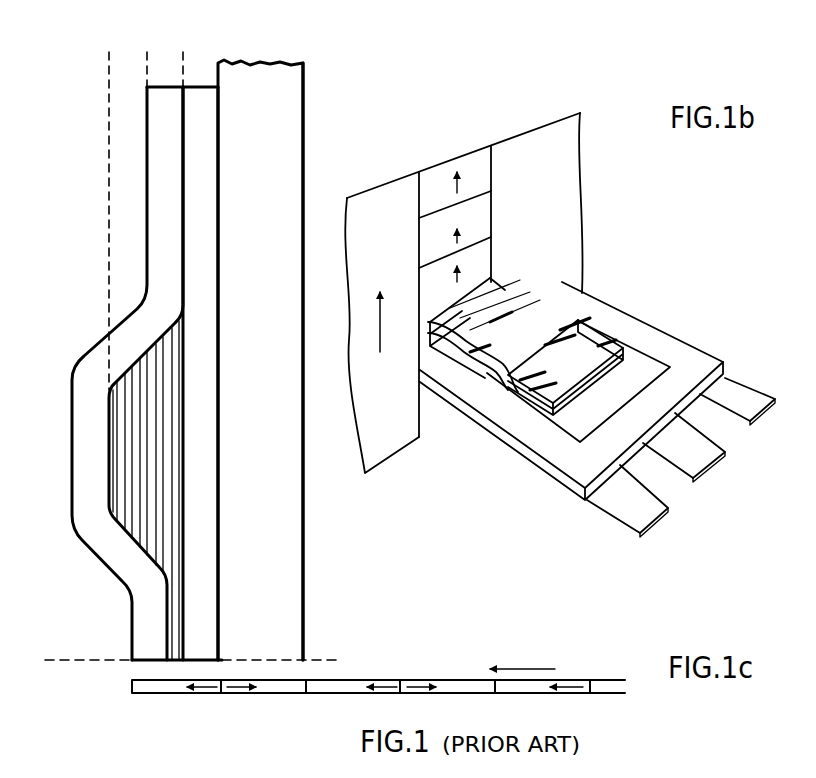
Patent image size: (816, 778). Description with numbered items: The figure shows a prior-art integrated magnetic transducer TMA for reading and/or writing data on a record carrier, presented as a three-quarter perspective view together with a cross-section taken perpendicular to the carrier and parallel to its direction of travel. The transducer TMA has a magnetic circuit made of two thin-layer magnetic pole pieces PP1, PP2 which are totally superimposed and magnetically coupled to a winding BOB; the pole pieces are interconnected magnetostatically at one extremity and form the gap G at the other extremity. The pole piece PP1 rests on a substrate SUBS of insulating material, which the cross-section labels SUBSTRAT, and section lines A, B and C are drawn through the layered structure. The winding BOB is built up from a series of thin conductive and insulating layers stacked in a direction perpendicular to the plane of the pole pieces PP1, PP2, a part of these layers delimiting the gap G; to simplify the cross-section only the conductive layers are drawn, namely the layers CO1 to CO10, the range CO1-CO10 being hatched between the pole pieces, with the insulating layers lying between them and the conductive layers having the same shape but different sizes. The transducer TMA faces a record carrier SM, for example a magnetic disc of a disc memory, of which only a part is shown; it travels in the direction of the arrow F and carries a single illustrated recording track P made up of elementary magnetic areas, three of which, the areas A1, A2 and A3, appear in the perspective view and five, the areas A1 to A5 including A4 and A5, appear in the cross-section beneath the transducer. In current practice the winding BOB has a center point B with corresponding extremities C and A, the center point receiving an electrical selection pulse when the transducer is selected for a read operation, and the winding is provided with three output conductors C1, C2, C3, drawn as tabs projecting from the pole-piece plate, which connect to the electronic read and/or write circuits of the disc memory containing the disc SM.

In FIG. 1C, the extremity of winding A is at (108, 210).
In FIG. 1B, the extremity of winding A is at (712, 383).
In FIG. 1C, the center point B is at (146, 59).
In FIG. 1B, the center point B is at (660, 433).
In FIG. 1C, the extremity of winding C is at (182, 59).
In FIG. 1B, the extremity of winding C is at (600, 487).
In FIG. 1C, the substrate SUBSTRAT is at (237, 75).
In FIG. 1C, the substrate SUBS is at (305, 548).
In FIG. 1C, the integrated magnetic transducer TMA is at (82, 264).
In FIG. 1C, the magnetic pole piece PP1 is at (203, 532).
In FIG. 1B, the magnetic pole piece PP1 is at (628, 352).
In FIG. 1C, the magnetic pole piece PP2 is at (133, 578).
In FIG. 1B, the magnetic pole piece PP2 is at (580, 293).
In FIG. 1C, the conductive layer CO1 is at (182, 393).
In FIG. 1C, the conductive layers CO1-CO10 is at (153, 440).
In FIG. 1C, the conductive layer CO10 is at (112, 493).
In FIG. 1C, the record carrier SM is at (378, 700).
In FIG. 1B, the record carrier SM is at (567, 233).
In FIG. 1C, the direction of travel arrow F is at (522, 656).
In FIG. 1B, the direction of travel arrow F is at (373, 322).
In FIG. 1C, the elementary magnetic area A1 is at (535, 695).
In FIG. 1B, the elementary magnetic area A1 is at (485, 162).
In FIG. 1C, the elementary magnetic area A2 is at (440, 695).
In FIG. 1B, the elementary magnetic area A2 is at (485, 203).
In FIG. 1C, the elementary magnetic area A3 is at (337, 695).
In FIG. 1B, the elementary magnetic area A3 is at (485, 241).
In FIG. 1C, the elementary magnetic area A4 is at (255, 695).
In FIG. 1C, the elementary magnetic area A5 is at (152, 695).
In FIG. 1B, the recording track P is at (419, 235).
In FIG. 1B, the gap G is at (430, 330).
In FIG. 1B, the winding BOB is at (512, 405).
In FIG. 1B, the output conductor C1 is at (630, 517).
In FIG. 1B, the output conductor C2 is at (687, 462).
In FIG. 1B, the output conductor C3 is at (742, 407).